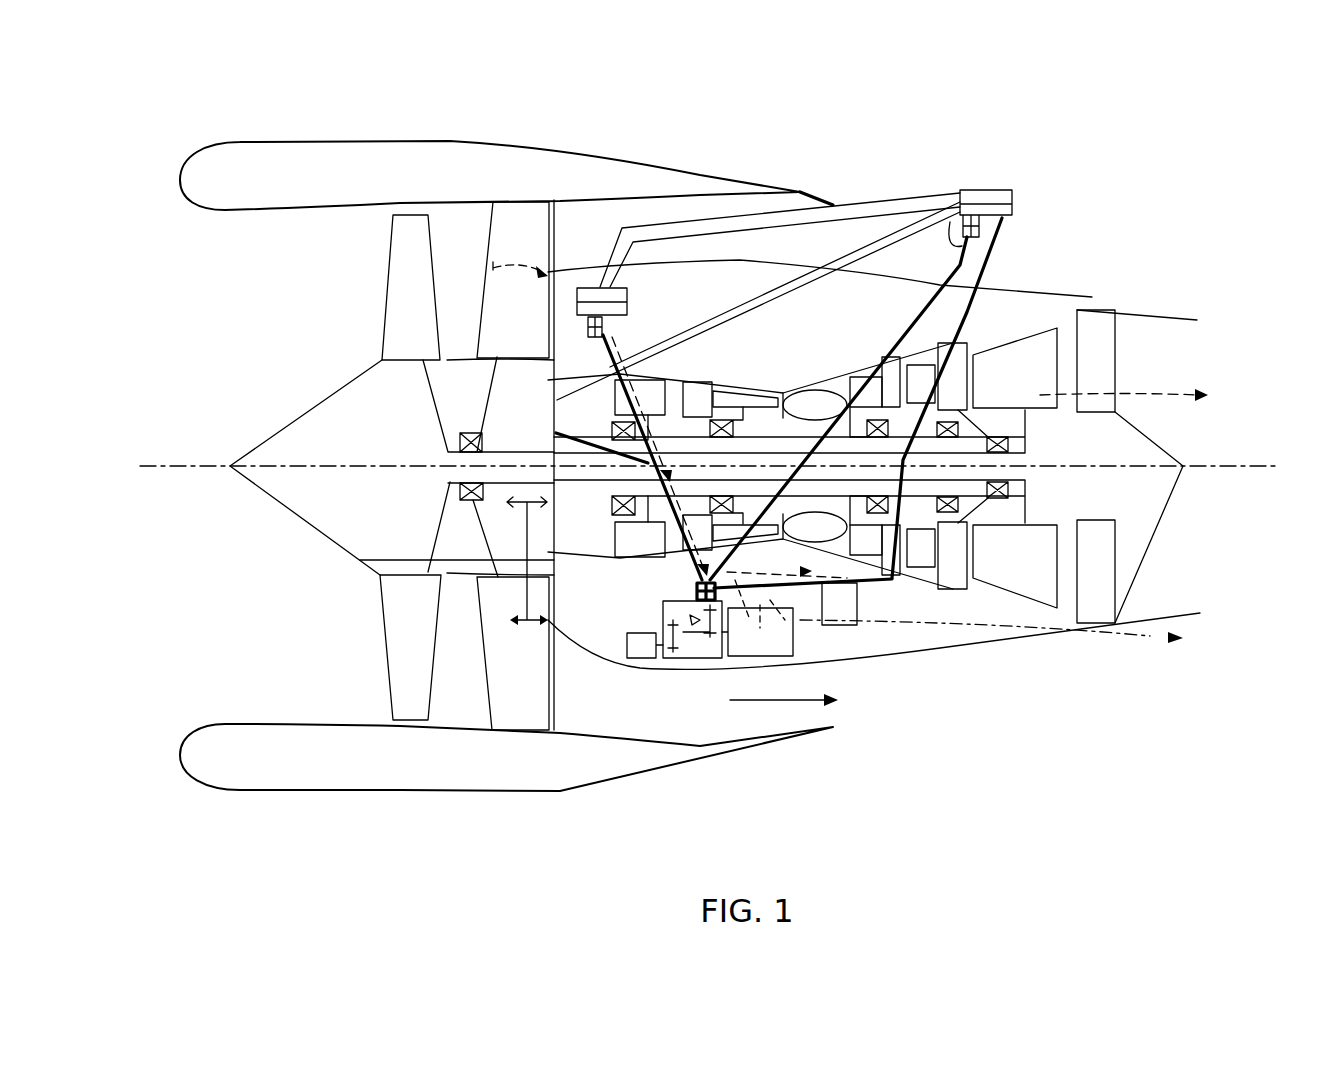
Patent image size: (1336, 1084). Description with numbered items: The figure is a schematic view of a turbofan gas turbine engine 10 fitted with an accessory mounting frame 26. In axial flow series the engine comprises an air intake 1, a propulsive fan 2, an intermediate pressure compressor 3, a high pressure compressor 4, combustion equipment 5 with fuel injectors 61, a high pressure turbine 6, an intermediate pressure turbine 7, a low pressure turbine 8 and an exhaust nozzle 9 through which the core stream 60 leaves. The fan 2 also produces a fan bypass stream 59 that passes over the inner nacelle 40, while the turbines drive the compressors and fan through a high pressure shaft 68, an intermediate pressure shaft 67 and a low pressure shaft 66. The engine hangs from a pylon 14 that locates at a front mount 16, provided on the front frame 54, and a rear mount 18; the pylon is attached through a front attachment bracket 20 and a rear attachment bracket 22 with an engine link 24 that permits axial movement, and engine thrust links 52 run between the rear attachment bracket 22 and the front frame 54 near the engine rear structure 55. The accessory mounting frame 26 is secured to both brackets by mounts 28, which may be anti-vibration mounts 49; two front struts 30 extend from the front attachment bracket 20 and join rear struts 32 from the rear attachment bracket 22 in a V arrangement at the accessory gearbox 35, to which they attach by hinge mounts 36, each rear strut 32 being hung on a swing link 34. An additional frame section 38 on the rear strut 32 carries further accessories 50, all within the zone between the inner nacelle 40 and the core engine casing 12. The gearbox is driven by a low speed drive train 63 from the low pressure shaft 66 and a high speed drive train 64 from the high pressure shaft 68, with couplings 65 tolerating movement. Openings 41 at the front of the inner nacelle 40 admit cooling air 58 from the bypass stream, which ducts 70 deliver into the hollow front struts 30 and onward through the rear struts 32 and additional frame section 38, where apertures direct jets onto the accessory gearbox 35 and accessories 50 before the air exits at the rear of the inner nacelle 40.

The air intake 1 is at (199, 245).
The propulsive fan 2 is at (403, 673).
The intermediate pressure compressor 3 is at (554, 548).
The high pressure compressor 4 is at (740, 398).
The combustion equipment 5 is at (823, 380).
The high pressure turbine 6 is at (860, 383).
The intermediate pressure turbine 7 is at (940, 373).
The low pressure turbine 8 is at (1045, 342).
The exhaust nozzle 9 is at (1196, 377).
The turbofan gas turbine engine 10 is at (796, 160).
The core engine casing 12 is at (543, 647).
The pylon 14 is at (892, 200).
The front mount 16 is at (575, 290).
The rear mount 18 is at (1019, 217).
The front attachment bracket 20 is at (595, 288).
The rear attachment bracket 22 is at (1015, 205).
The engine link 24 is at (995, 251).
The accessory mounting frame 26 is at (800, 647).
The mounts 28 is at (1002, 215).
The front struts 30 is at (570, 363).
The rear struts 32 is at (793, 652).
The swing link 34 is at (950, 222).
The accessory gearbox 35 is at (703, 660).
The hinge mounts 36 is at (730, 702).
The additional frame section 38 is at (925, 615).
The inner nacelle 40 is at (667, 668).
The openings 41 is at (560, 305).
The anti-vibration mounts 49 is at (972, 215).
The further accessories 50 is at (857, 595).
The engine thrust links 52 is at (735, 312).
The front frame 54 is at (498, 262).
The engine rear structure 55 is at (957, 592).
The cooling air 58 is at (585, 322).
The fan bypass stream 59 is at (795, 650).
The core stream 60 is at (1153, 395).
The fuel injectors 61 is at (830, 612).
The low speed drive train 63 is at (553, 647).
The high speed drive train 64 is at (550, 730).
The couplings 65 is at (557, 607).
The low pressure shaft 66 is at (973, 470).
The intermediate pressure shaft 67 is at (930, 487).
The high pressure shaft 68 is at (795, 410).
The ducts 70 is at (555, 330).